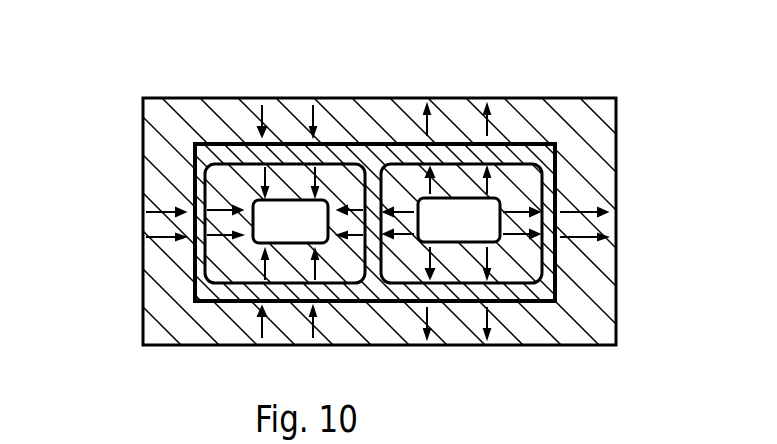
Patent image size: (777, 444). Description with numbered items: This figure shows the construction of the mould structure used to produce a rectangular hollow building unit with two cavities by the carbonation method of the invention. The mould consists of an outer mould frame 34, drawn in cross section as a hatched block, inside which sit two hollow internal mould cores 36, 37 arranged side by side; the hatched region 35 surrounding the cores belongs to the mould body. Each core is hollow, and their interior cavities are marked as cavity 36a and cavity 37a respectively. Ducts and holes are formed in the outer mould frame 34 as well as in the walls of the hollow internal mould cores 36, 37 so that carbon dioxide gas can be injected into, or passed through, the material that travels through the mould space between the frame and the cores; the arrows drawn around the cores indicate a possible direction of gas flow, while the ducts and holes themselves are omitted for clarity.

The outer mould frame 34 is at (557, 143).
The outer block 35 is at (588, 170).
The hollow internal mould core 36 is at (267, 215).
The cavity 36a is at (227, 232).
The hollow internal mould core 37 is at (500, 201).
The cavity 37a is at (478, 224).